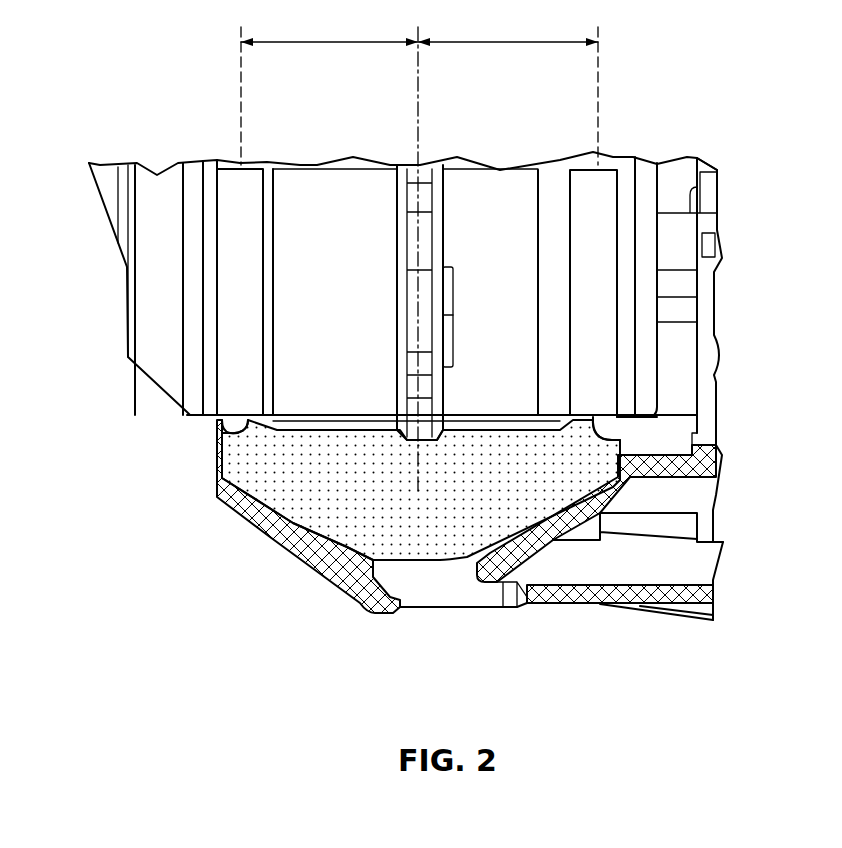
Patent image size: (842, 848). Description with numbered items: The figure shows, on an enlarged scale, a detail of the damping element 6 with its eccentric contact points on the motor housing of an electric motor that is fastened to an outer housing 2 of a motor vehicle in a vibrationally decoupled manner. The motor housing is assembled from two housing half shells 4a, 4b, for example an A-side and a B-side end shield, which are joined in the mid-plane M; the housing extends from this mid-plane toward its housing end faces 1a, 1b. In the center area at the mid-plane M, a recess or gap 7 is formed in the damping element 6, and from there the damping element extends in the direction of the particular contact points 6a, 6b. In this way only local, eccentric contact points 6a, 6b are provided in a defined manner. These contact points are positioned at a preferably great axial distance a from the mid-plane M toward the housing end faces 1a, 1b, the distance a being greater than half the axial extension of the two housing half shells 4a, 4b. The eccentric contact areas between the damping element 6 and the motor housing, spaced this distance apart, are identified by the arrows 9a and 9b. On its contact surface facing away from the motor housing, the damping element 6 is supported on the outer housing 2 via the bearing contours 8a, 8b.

The housing end face 1a is at (128, 342).
The housing end face 1b is at (655, 270).
The outer housing 2 is at (677, 613).
The housing half shell 4a is at (197, 285).
The housing half shell 4b is at (647, 183).
The damping element 6 is at (283, 482).
The contact point 6a is at (248, 420).
The contact point 6b is at (617, 437).
The recess 7 is at (343, 425).
The bearing contour 8a is at (307, 533).
The bearing contour 8b is at (560, 530).
The arrow 9a is at (240, 165).
The arrow 9b is at (601, 168).
The mid-plane M is at (420, 108).
The axial distance a is at (335, 42).